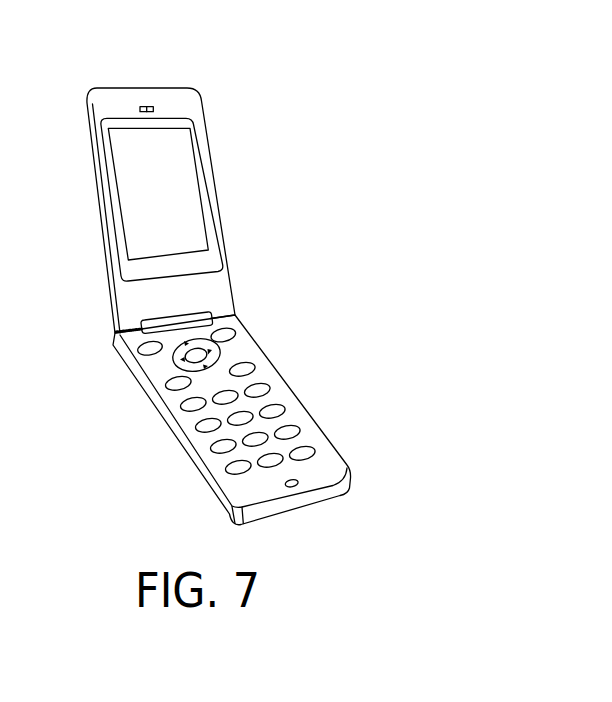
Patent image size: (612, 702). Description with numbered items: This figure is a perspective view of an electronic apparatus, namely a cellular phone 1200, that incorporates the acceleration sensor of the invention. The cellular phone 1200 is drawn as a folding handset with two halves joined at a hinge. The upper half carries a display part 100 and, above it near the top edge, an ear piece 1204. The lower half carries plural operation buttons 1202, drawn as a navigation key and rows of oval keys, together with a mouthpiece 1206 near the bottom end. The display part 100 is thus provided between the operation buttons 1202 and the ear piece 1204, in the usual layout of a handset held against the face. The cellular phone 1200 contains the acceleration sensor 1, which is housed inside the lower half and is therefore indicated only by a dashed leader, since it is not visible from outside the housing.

The cellular phone 1200 is at (239, 54).
The ear piece 1204 is at (150, 106).
The display part 100 is at (187, 187).
The acceleration sensor 1 is at (232, 353).
The operation buttons 1202 is at (264, 388).
The mouthpiece 1206 is at (292, 481).